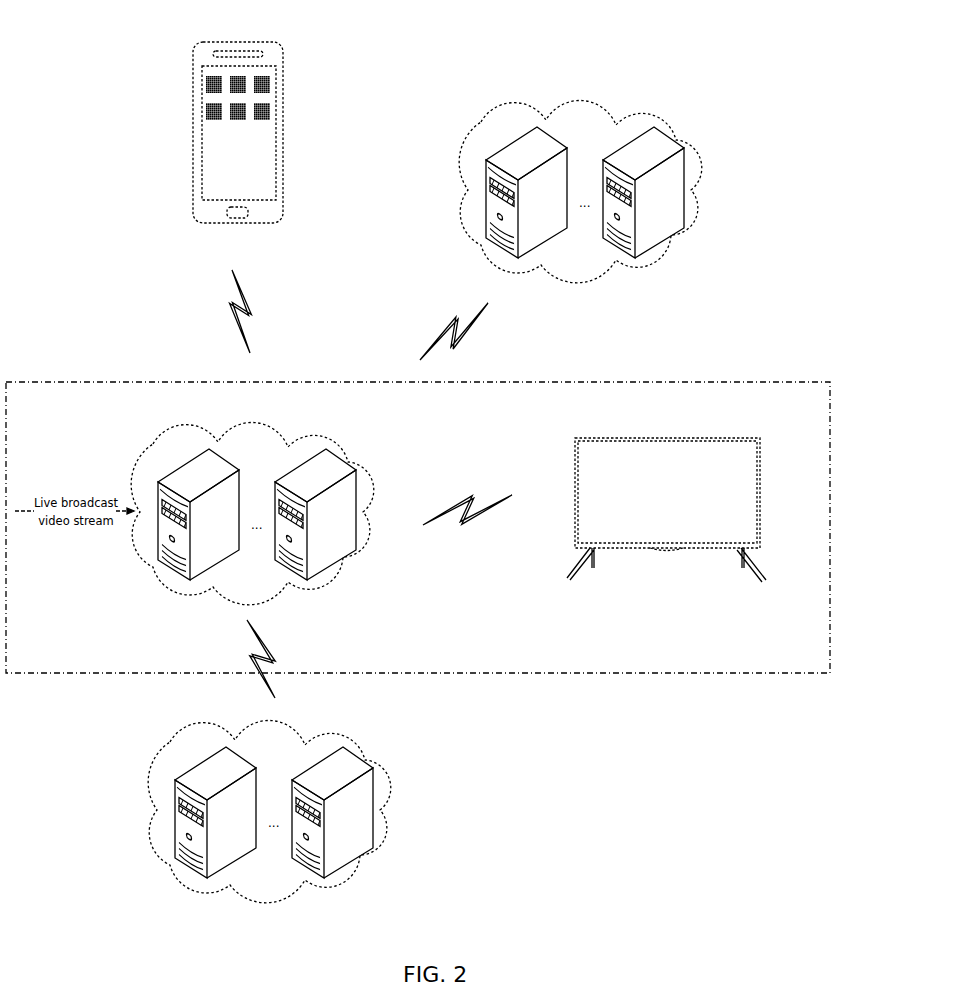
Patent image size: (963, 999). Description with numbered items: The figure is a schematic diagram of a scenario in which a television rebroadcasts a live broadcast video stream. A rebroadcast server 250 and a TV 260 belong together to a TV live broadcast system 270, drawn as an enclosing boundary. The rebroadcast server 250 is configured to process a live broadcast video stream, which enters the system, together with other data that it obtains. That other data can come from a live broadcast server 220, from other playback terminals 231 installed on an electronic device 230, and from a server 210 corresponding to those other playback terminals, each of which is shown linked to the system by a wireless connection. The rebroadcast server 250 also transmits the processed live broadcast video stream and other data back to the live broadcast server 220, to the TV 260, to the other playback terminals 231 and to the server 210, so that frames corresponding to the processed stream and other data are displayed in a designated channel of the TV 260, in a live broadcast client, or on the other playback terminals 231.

The server 210 is at (703, 170).
The live broadcast server 220 is at (393, 787).
The electronic device 230 is at (284, 147).
The other playback terminals 231 is at (203, 118).
The rebroadcast server 250 is at (372, 490).
The TV 260 is at (761, 465).
The TV live broadcast system 270 is at (831, 398).